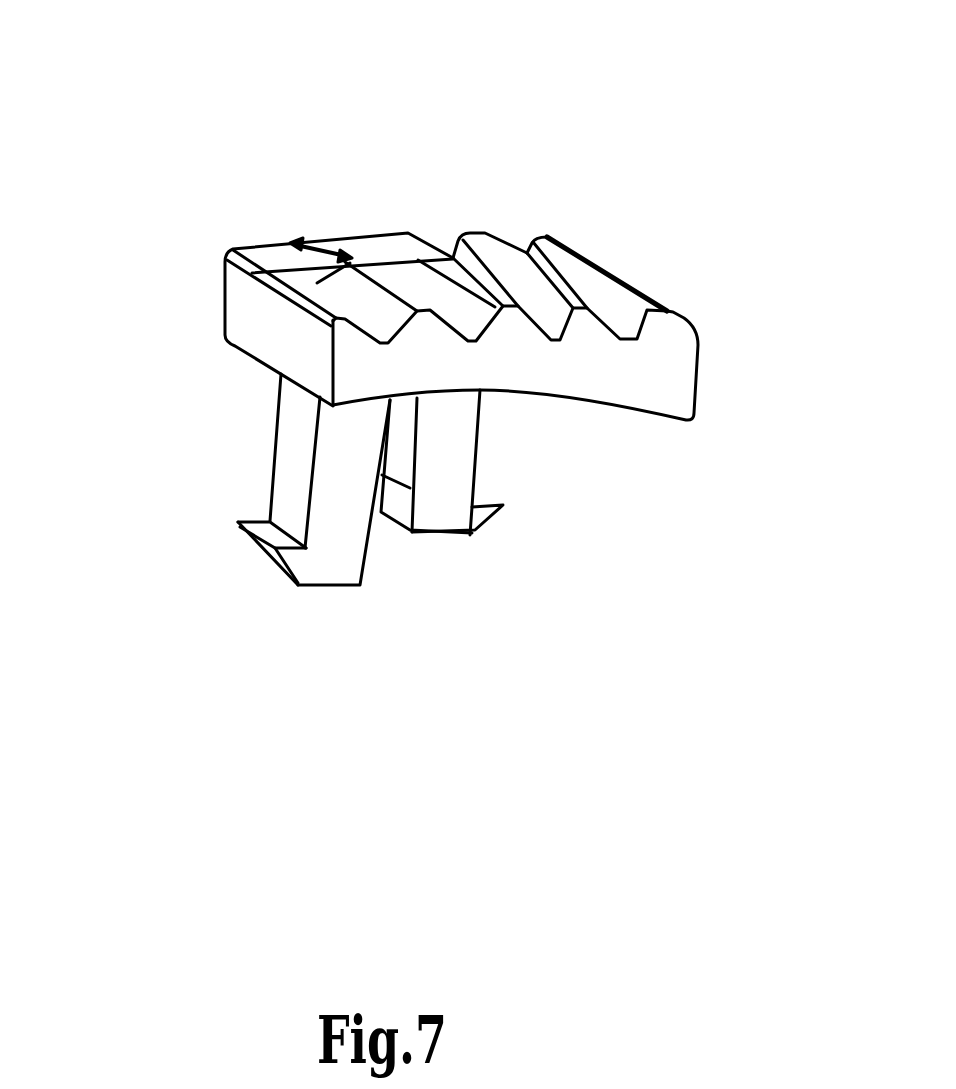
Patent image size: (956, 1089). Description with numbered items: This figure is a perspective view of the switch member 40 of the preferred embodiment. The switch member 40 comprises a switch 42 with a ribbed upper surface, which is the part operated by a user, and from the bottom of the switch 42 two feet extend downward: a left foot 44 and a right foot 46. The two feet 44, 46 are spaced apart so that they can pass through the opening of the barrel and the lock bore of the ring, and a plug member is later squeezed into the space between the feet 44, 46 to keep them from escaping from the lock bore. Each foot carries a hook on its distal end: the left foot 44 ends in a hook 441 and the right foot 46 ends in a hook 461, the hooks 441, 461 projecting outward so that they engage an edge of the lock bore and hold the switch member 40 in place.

The switch member 40 is at (398, 230).
The switch 42 is at (625, 275).
The left foot 44 is at (290, 470).
The hook 441 is at (257, 556).
The right foot 46 is at (463, 453).
The hook 461 is at (474, 518).